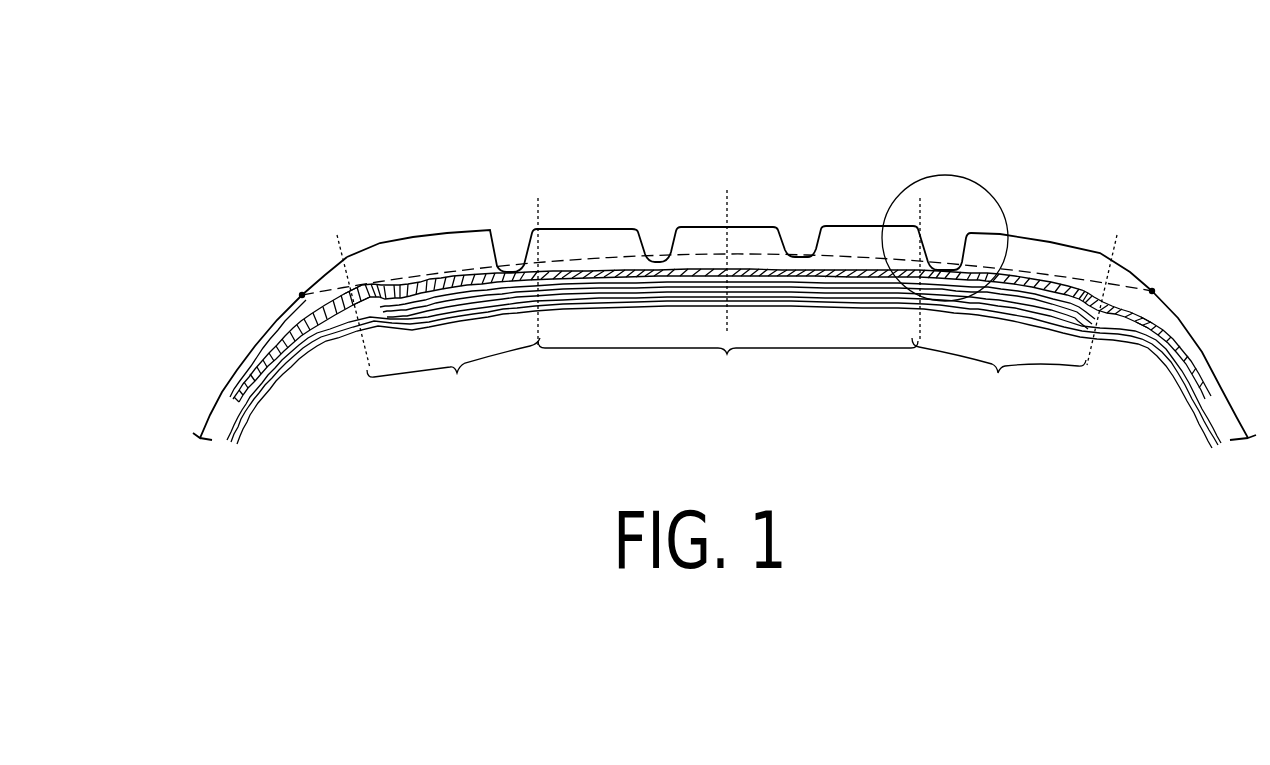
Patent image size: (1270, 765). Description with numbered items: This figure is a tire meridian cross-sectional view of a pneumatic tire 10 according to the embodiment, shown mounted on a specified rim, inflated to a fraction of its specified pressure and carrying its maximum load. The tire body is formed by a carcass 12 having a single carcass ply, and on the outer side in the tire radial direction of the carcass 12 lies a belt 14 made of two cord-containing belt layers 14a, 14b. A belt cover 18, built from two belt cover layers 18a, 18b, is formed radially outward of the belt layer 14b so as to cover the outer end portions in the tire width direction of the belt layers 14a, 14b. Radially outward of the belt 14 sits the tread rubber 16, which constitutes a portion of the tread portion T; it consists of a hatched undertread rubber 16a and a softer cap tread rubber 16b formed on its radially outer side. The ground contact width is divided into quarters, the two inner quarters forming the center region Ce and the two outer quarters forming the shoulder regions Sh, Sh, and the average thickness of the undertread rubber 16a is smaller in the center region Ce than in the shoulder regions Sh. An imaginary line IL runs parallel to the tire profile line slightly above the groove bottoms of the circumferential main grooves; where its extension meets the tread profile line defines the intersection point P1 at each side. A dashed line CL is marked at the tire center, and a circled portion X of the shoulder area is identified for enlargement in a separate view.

The pneumatic tire 10 is at (330, 109).
The carcass 12 is at (265, 352).
The belt 14 is at (408, 142).
The belt layer 14a is at (455, 298).
The belt layer 14b is at (477, 231).
The tread rubber 16 is at (542, 98).
The undertread rubber 16a is at (554, 266).
The cap tread rubber 16b is at (607, 238).
The belt cover 18 is at (277, 223).
The belt cover layer 18a is at (280, 313).
The belt cover layer 18b is at (305, 320).
The intersection point P1 is at (303, 294).
The imaginary line IL is at (748, 254).
The tire equator center line CL is at (728, 248).
The circled portion X is at (994, 191).
The tread portion T is at (856, 188).
The shoulder region Sh is at (727, 300).
The center region Ce is at (728, 364).